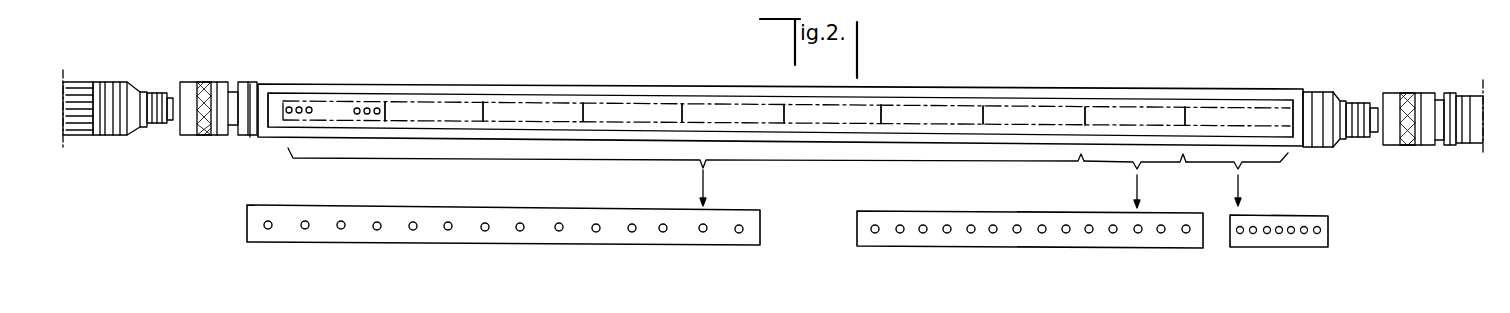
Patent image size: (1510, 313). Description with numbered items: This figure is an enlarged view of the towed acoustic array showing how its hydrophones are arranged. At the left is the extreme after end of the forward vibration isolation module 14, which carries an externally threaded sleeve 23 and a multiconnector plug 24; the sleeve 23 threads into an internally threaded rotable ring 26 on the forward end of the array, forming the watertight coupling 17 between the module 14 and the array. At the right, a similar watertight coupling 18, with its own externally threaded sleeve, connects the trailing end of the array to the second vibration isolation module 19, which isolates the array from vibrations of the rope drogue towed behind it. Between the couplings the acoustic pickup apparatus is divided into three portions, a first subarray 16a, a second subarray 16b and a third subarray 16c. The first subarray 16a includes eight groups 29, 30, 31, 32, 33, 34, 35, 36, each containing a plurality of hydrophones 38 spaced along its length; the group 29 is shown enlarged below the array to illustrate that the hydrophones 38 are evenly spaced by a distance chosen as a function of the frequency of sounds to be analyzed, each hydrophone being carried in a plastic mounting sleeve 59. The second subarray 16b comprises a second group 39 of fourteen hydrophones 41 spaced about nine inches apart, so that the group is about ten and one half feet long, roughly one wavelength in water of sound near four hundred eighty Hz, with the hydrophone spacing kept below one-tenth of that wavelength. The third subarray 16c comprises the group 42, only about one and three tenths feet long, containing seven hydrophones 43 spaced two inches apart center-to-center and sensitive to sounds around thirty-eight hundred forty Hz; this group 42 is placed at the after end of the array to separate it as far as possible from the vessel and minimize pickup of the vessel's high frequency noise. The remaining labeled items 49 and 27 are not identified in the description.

The vibration isolation module 14 is at (86, 136).
The watertight coupling 17 is at (182, 66).
The externally threaded sleeve 23 is at (153, 92).
The multiconnector plug 24 is at (172, 120).
The internally threaded rotable ring 26 is at (214, 94).
The hydrophone group 29 is at (348, 104).
The hydrophone group 30 is at (452, 104).
The hydrophone group 31 is at (516, 108).
The hydrophone group 32 is at (618, 108).
The hydrophone group 33 is at (710, 110).
The hydrophone group 34 is at (830, 112).
The hydrophone group 35 is at (930, 113).
The hydrophone group 36 is at (1040, 112).
The circuit segment 49 is at (1135, 112).
The third hydrophone group 42 is at (1228, 112).
The plastic mounting sleeve 59 is at (758, 140).
The first subarray 16a is at (855, 162).
The second subarray 16b is at (1121, 162).
The third subarray 16c is at (1226, 163).
The hydrophones 38 is at (377, 226).
The hydrophones 41 is at (947, 226).
The second hydrophone group 39 is at (1037, 195).
The hydrophones 43 is at (1240, 234).
The watertight coupling 18 is at (1380, 64).
The second vibration isolation module 19 is at (1472, 80).
The knurled coupling nut 27 is at (1405, 146).